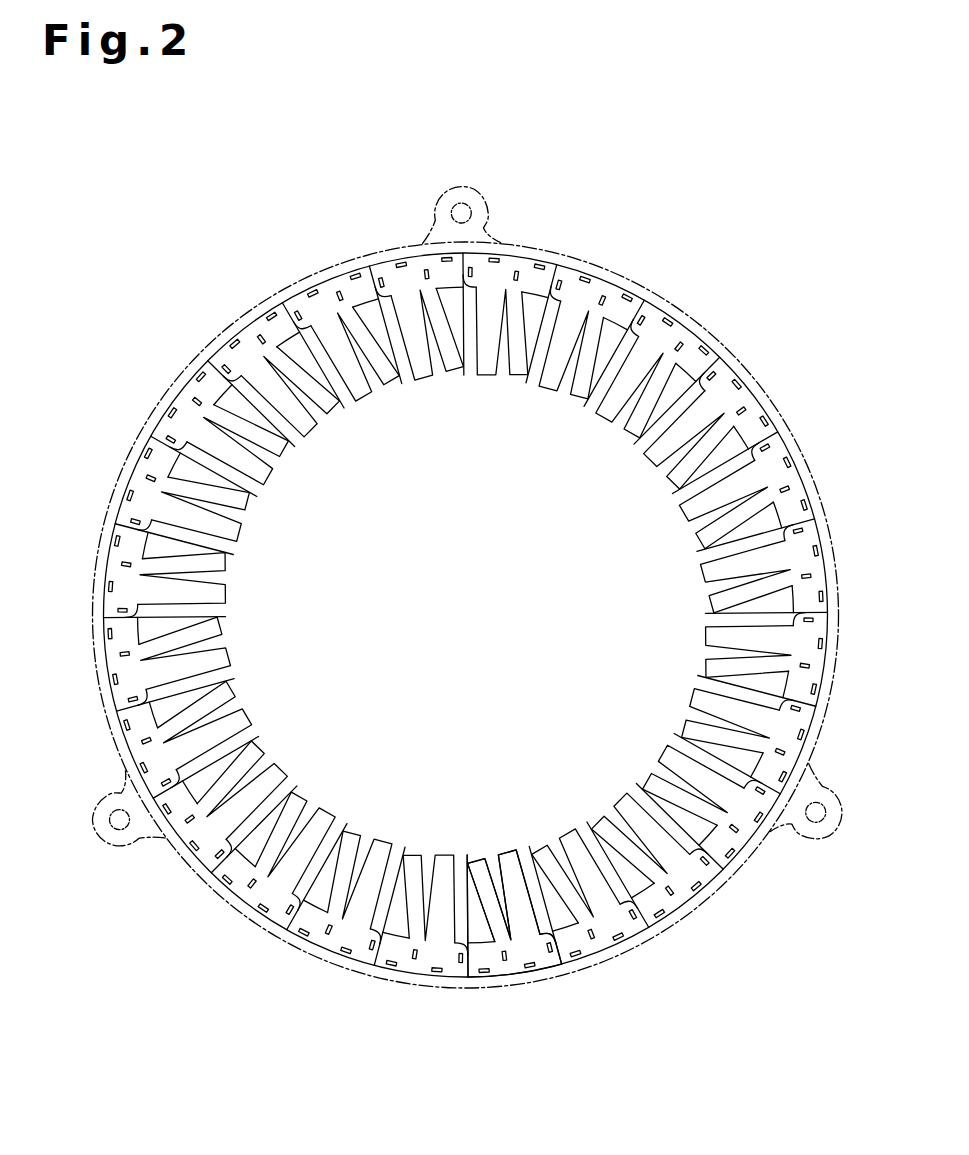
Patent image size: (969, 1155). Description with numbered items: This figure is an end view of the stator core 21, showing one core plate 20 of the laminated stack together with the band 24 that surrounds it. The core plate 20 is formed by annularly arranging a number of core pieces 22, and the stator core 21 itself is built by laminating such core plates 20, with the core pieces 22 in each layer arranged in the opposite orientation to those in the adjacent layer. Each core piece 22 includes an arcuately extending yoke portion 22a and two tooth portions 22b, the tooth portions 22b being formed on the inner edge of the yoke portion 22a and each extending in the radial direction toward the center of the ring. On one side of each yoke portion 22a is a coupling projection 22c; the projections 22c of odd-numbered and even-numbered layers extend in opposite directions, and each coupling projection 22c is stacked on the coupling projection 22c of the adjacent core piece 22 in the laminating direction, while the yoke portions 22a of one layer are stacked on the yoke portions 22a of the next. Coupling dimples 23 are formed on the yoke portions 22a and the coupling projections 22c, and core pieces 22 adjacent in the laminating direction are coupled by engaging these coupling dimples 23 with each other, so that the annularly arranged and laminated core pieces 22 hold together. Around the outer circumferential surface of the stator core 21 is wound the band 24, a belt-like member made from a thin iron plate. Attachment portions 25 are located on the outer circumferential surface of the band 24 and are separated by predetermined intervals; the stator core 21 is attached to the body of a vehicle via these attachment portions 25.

The core plate 20 is at (441, 622).
The stator core 21 is at (337, 266).
The core piece 22 is at (218, 351).
The yoke portion 22a is at (765, 392).
The tooth portion 22b is at (664, 489).
The coupling projection 22c is at (727, 351).
The coupling dimple 23 is at (812, 470).
The band 24 is at (546, 247).
The attachment portion 25 is at (478, 190).